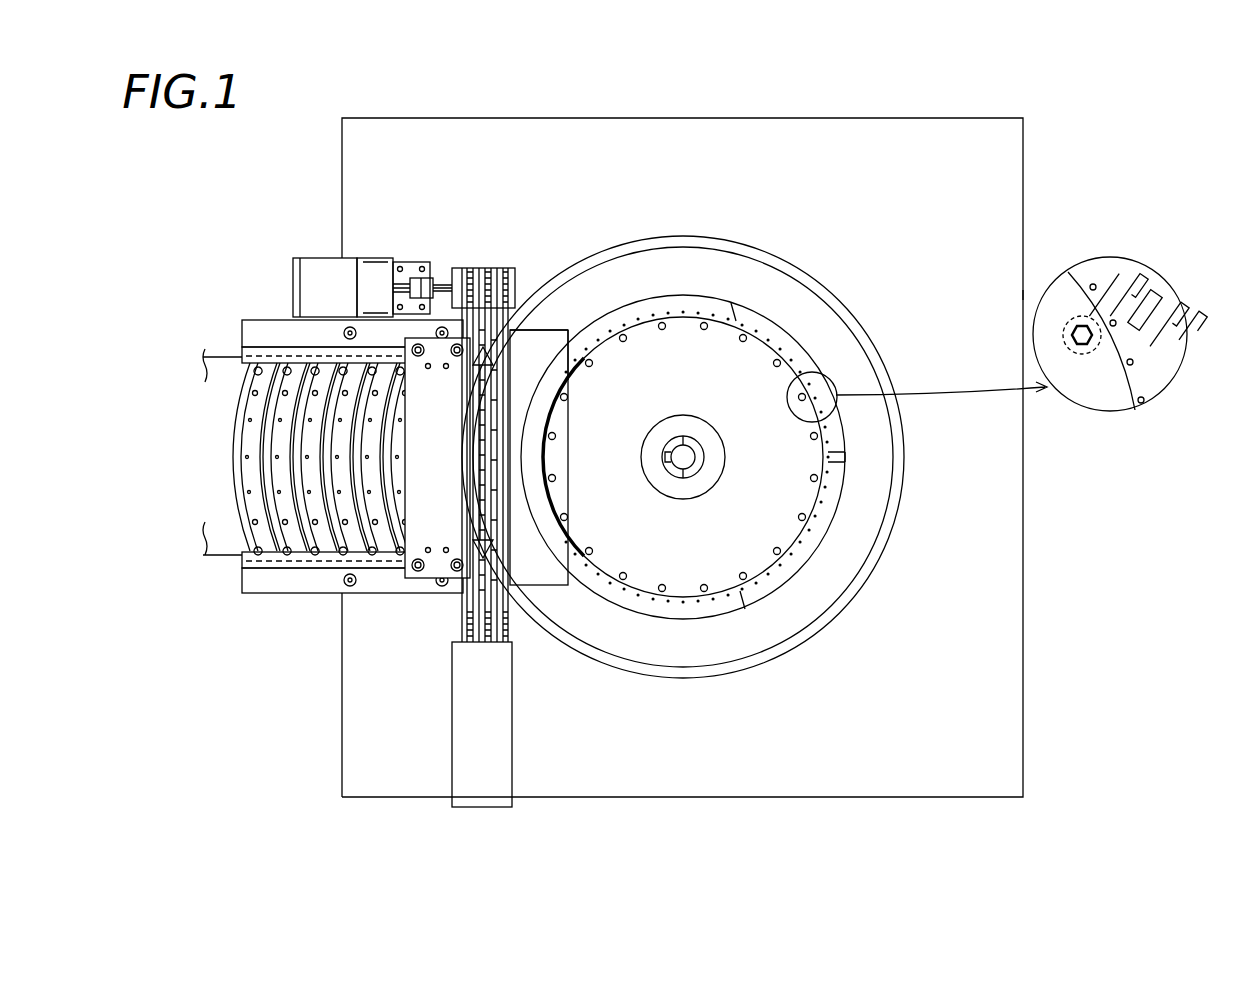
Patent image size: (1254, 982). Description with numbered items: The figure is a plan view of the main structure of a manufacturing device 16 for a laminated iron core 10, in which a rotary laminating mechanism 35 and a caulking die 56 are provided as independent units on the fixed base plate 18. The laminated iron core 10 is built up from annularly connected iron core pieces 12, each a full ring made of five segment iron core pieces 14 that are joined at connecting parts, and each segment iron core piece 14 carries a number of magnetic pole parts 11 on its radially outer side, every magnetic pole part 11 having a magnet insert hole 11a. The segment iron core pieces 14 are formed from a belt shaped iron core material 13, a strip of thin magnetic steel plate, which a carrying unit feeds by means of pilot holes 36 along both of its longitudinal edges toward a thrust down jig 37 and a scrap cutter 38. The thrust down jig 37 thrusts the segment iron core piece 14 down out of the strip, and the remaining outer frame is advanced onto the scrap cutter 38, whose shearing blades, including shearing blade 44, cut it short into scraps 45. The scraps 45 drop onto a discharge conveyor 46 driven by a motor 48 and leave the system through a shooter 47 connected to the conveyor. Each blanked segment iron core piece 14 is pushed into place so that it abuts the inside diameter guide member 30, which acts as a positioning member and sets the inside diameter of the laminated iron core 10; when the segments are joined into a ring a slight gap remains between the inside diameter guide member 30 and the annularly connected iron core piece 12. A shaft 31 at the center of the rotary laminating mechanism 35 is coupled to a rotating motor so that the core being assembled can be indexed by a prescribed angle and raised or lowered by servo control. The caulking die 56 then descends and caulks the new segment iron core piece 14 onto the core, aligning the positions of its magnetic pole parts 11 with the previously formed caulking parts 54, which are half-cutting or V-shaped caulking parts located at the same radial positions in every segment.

The laminated iron core 10 is at (788, 310).
The magnetic pole parts 11 is at (818, 346).
The magnet insert hole 11a is at (1150, 325).
The annularly connected iron core piece 12 is at (858, 514).
The belt shaped iron core material 13 is at (243, 373).
The segment iron core pieces 14 is at (287, 472).
The manufacturing device for the laminated iron core 16 is at (1043, 166).
The base plate 18 is at (985, 708).
The inside diameter guide member 30 is at (668, 611).
The shaft 31 is at (690, 462).
The rotary laminating mechanism 35 is at (557, 314).
The pilot holes 36 is at (262, 357).
The thrust down jig 37 is at (413, 520).
The scrap cutter 38 is at (522, 551).
The shearing blade 44 is at (551, 320).
The scraps 45 is at (466, 355).
The discharge conveyor 46 is at (447, 624).
The shooter 47 is at (500, 768).
The motor 48 is at (313, 265).
The caulking parts 54 is at (795, 552).
The caulking die 56 is at (571, 312).